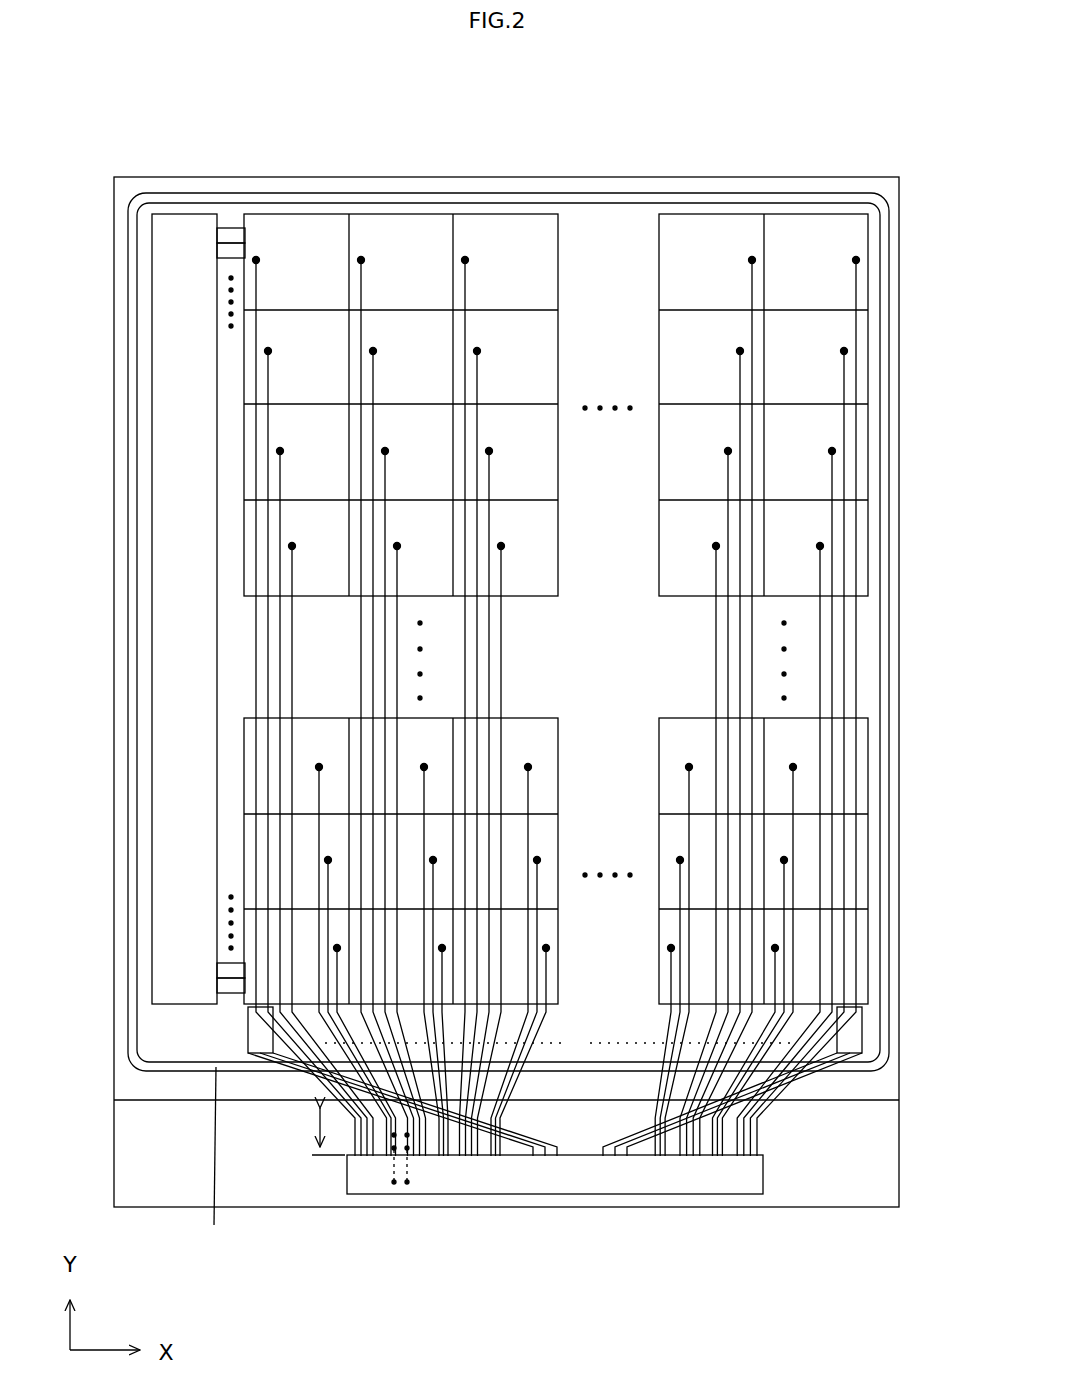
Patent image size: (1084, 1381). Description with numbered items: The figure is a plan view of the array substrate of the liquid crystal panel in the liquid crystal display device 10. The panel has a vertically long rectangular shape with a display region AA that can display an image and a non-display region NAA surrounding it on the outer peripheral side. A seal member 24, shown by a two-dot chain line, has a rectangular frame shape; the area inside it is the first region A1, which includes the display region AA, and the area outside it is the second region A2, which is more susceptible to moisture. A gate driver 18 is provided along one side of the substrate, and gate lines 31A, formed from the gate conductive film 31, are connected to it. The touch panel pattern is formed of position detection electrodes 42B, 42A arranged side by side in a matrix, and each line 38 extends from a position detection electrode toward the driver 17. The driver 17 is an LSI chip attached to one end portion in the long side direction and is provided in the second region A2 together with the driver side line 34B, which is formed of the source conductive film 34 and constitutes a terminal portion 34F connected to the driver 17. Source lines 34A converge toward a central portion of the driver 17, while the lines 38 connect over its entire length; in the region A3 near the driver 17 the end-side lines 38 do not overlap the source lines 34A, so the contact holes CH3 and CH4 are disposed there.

The liquid crystal display device 10 is at (165, 103).
The gate driver 18 is at (160, 393).
The gate line 31A is at (228, 227).
The gate conductive film 31 is at (179, 558).
The position detection electrode 42B is at (833, 327).
The position detection electrode 42A is at (501, 609).
The line 38 is at (328, 880).
The display region AA is at (866, 634).
The non-display region NAA is at (868, 1086).
The first region A1 is at (205, 1028).
The second region A2 is at (205, 1127).
The region A3 is at (315, 1131).
The seal member 24 is at (212, 1162).
The source line 34A is at (262, 1058).
The source conductive film 34 is at (549, 1169).
The driver side line 34B is at (410, 1160).
The terminal portion 34F is at (407, 1185).
The contact hole CH3 is at (392, 1137).
The contact hole CH4 is at (393, 1151).
The driver 17 is at (584, 1178).